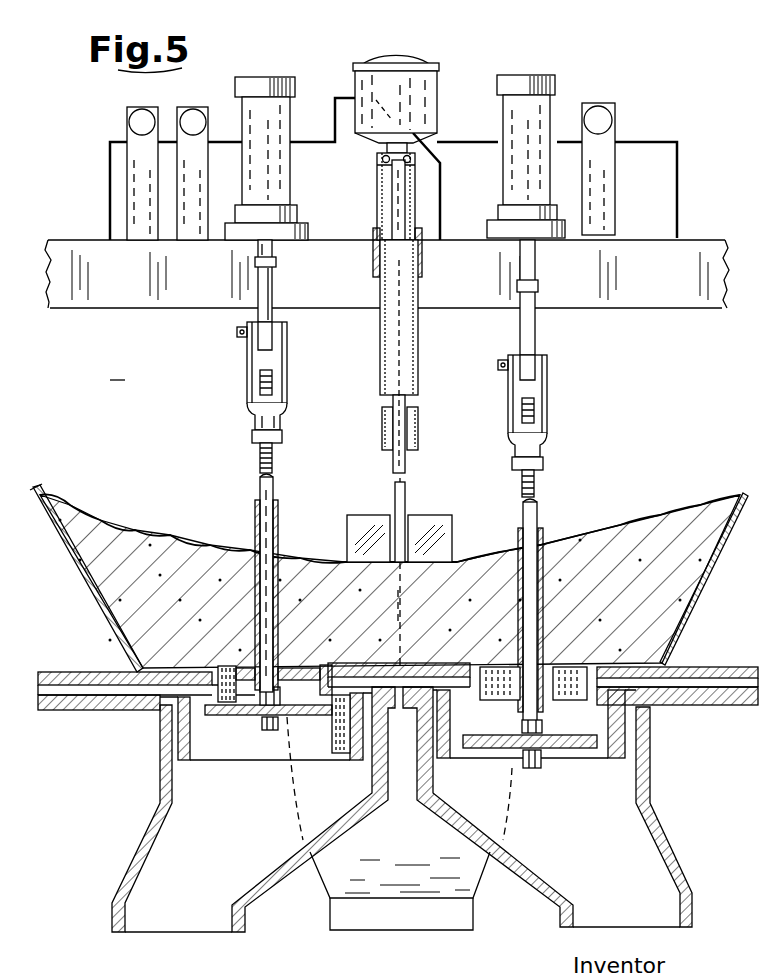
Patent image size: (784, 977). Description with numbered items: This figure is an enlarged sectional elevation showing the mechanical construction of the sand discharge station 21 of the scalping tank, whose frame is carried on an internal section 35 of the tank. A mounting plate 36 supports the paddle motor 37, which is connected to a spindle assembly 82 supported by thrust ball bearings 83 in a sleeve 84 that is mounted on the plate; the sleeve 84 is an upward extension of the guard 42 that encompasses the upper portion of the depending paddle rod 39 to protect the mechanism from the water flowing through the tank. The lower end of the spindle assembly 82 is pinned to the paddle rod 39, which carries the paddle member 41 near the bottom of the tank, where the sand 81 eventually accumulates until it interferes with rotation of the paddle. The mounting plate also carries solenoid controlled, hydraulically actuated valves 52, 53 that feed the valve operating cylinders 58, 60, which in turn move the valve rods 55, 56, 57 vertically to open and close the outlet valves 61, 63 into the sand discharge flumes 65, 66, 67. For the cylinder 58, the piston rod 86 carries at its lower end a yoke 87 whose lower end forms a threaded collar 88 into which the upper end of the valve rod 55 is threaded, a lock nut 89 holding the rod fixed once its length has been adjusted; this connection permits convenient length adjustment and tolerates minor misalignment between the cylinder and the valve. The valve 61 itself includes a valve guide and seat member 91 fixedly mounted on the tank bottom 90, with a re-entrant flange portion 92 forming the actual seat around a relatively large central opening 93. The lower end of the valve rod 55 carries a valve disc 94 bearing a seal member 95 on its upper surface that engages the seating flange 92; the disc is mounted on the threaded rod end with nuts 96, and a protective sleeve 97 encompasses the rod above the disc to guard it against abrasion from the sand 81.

The discharge station 21 is at (192, 418).
The internal section 35 is at (713, 560).
The mounting plate 36 is at (610, 297).
The paddle motor 37 is at (410, 80).
The paddle rod 39 is at (407, 493).
The paddle member 41 is at (435, 527).
The guard 42 is at (418, 355).
The solenoid controlled hydraulically actuated valve 52 is at (180, 110).
The solenoid controlled hydraulically actuated valve 53 is at (127, 112).
The valve rod 55 is at (272, 475).
The valve rod 56 is at (407, 605).
The valve rod 57 is at (537, 510).
The valve operating cylinder 58 is at (262, 78).
The valve operating cylinder 60 is at (538, 78).
The outlet valve 61 is at (266, 722).
The outlet valve 63 is at (568, 782).
The sand discharge flume 65 is at (168, 903).
The sand discharge flume 66 is at (408, 918).
The sand discharge flume 67 is at (597, 918).
The sand 81 is at (627, 545).
The spindle assembly 82 is at (398, 198).
The ball bearings 83 is at (375, 245).
The sleeve 84 is at (378, 185).
The piston rod 86 is at (270, 292).
The yoke 87 is at (287, 375).
The threaded collar 88 is at (283, 410).
The lock nut 89 is at (272, 440).
The tank bottom 90 is at (90, 672).
The valve guide and seat member 91 is at (355, 757).
The re-entrant flange portion 92 is at (340, 710).
The central opening 93 is at (303, 665).
The valve disc 94 is at (222, 715).
The seal member 95 is at (237, 670).
The nuts 96 is at (280, 727).
The protective sleeve 97 is at (278, 520).